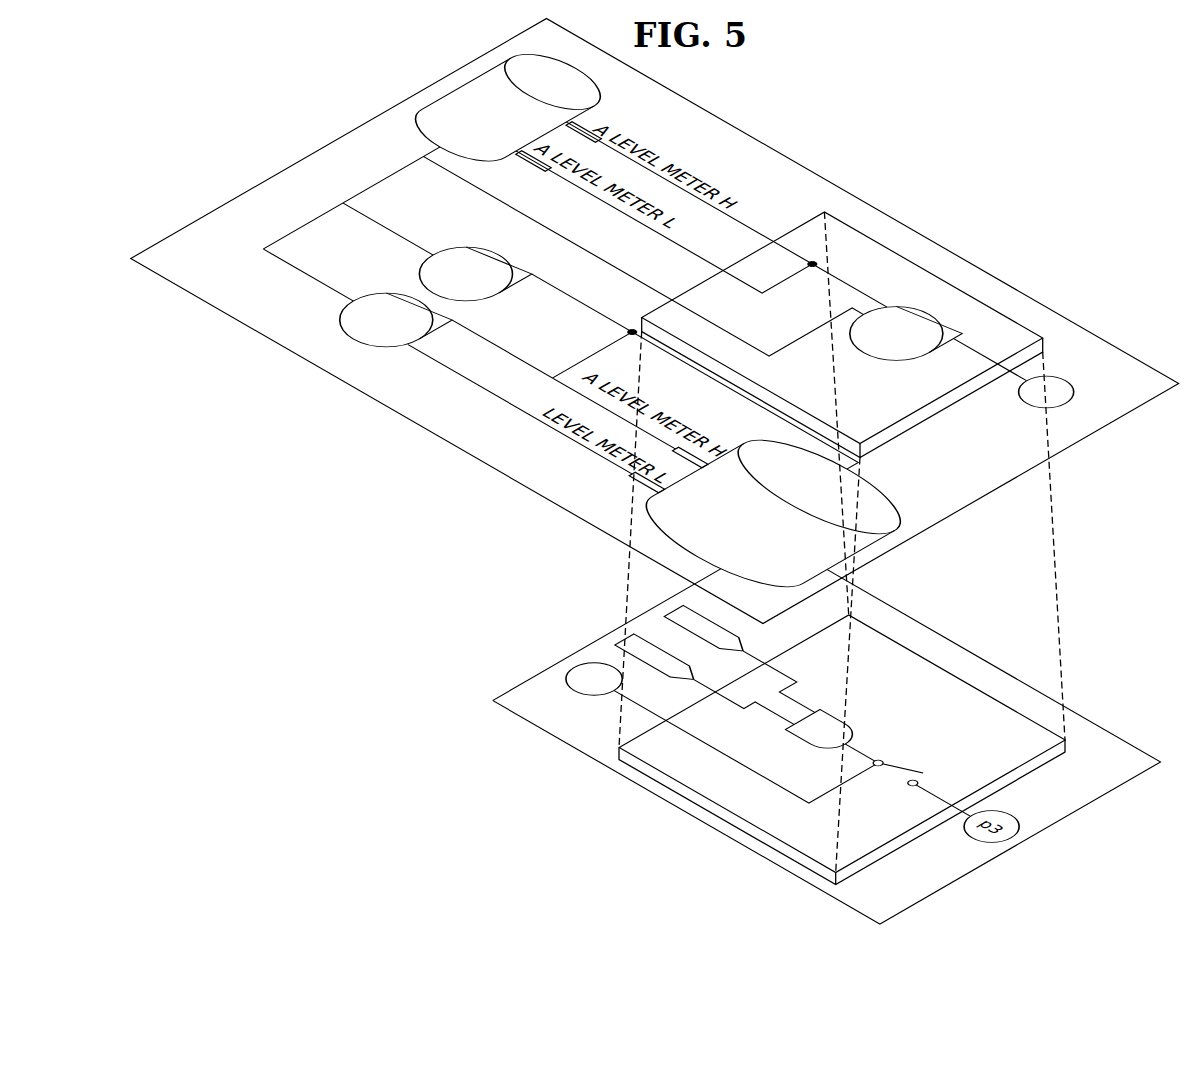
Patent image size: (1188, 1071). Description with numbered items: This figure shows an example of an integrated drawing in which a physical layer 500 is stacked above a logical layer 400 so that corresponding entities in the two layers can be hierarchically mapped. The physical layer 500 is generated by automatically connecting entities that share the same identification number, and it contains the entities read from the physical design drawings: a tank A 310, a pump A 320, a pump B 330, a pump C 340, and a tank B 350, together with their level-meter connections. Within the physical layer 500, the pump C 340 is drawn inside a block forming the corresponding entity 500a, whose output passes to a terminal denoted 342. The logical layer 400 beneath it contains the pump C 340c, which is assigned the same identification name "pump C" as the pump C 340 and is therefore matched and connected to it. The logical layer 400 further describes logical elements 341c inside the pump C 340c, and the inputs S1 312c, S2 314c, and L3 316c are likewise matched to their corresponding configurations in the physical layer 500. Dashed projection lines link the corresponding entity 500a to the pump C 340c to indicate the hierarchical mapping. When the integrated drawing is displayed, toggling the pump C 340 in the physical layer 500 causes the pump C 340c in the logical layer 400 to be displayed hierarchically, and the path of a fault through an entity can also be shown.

The physical layer 500 is at (862, 201).
The corresponding entity in the physical layer 500a is at (848, 324).
The logical layer 400 is at (834, 727).
The tank A 310 is at (523, 109).
The pump A 320 is at (489, 275).
The pump B 330 is at (407, 324).
The pump C 340 is at (921, 339).
The output p3 342 is at (1042, 379).
The tank B 350 is at (777, 512).
The S1 312c is at (759, 653).
The S2 314c is at (714, 679).
The L3 316c is at (714, 722).
The pump C in the logical layer 340c is at (850, 739).
The logical elements 341c is at (855, 732).